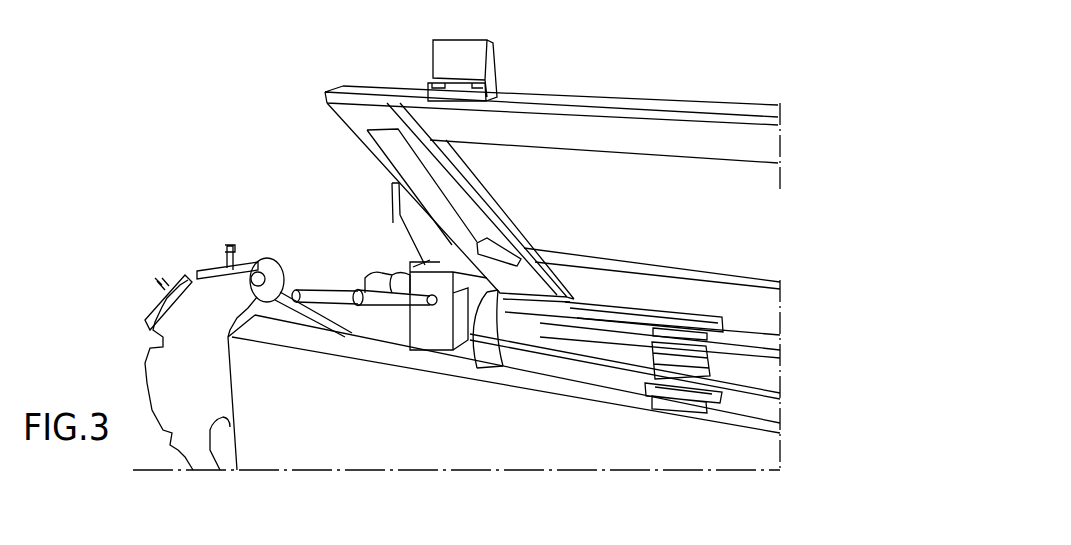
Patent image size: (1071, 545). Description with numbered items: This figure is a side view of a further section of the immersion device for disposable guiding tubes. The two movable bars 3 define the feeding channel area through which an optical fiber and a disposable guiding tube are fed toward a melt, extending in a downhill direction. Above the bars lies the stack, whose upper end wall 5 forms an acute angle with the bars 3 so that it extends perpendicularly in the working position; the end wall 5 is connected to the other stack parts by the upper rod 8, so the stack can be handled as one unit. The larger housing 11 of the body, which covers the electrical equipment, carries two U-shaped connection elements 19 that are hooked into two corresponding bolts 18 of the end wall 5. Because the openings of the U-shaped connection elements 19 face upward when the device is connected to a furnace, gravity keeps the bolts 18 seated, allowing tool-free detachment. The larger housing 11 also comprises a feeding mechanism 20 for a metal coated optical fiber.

The movable bars 3 is at (760, 410).
The upper end wall 5 is at (370, 147).
The upper rod 8 is at (700, 142).
The larger housing 11 is at (708, 455).
The bolts 18 is at (435, 310).
The U-shaped connection elements 19 is at (409, 308).
The feeding mechanism 20 is at (212, 313).